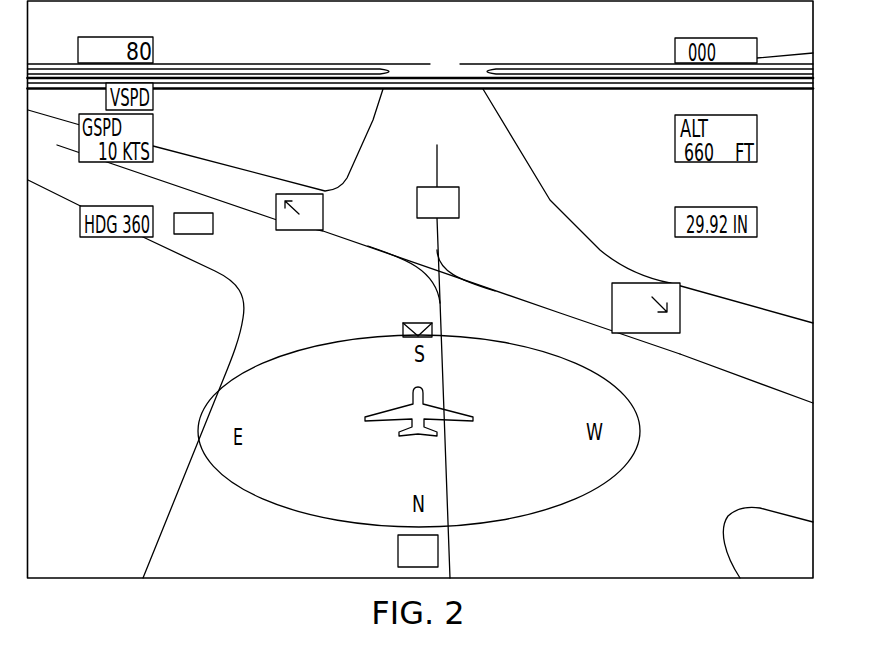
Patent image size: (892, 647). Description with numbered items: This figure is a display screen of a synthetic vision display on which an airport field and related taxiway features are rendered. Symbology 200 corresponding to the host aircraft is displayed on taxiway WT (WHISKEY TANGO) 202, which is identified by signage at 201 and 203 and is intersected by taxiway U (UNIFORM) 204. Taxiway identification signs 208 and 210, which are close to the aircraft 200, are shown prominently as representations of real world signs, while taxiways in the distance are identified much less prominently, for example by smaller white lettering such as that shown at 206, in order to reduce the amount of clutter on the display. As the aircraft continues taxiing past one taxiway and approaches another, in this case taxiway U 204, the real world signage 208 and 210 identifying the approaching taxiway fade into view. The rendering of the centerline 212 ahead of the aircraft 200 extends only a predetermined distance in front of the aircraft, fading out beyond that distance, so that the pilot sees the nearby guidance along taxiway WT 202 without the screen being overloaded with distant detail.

The symbology corresponding to host aircraft 200 is at (413, 401).
The signage identifying taxiway WT 201 is at (459, 205).
The taxiway WT (WHISKEY TANGO) 202 is at (458, 128).
The signage identifying taxiway WT 203 is at (398, 550).
The taxiway U (UNIFORM) 204 is at (796, 378).
The smaller white lettering 206 is at (461, 59).
The taxiway identification sign 208 is at (323, 212).
The taxiway identification sign 210 is at (612, 297).
The centerline 212 is at (437, 165).